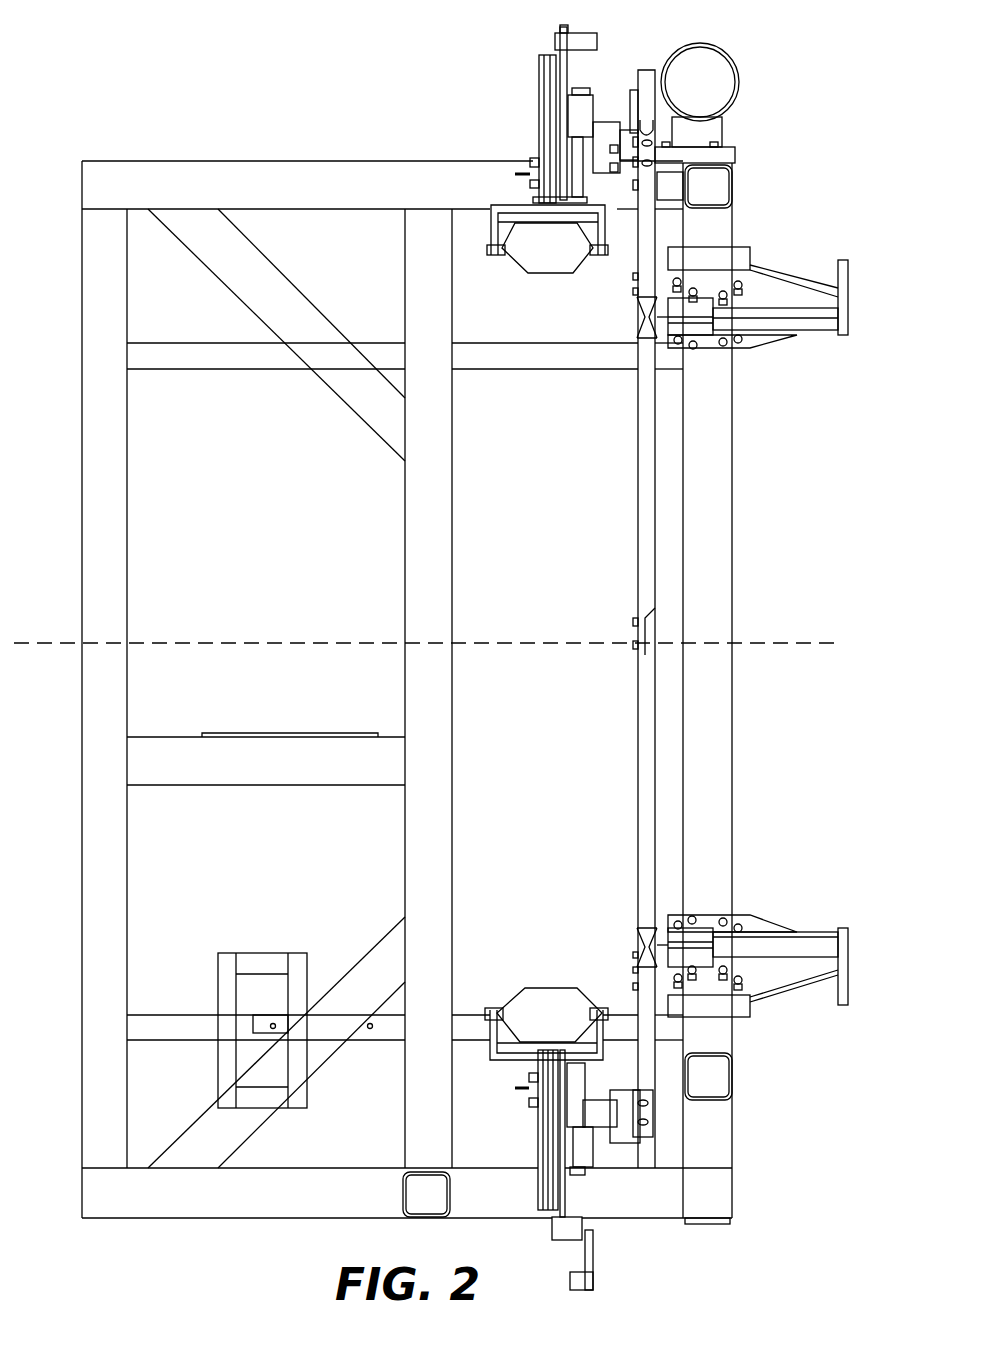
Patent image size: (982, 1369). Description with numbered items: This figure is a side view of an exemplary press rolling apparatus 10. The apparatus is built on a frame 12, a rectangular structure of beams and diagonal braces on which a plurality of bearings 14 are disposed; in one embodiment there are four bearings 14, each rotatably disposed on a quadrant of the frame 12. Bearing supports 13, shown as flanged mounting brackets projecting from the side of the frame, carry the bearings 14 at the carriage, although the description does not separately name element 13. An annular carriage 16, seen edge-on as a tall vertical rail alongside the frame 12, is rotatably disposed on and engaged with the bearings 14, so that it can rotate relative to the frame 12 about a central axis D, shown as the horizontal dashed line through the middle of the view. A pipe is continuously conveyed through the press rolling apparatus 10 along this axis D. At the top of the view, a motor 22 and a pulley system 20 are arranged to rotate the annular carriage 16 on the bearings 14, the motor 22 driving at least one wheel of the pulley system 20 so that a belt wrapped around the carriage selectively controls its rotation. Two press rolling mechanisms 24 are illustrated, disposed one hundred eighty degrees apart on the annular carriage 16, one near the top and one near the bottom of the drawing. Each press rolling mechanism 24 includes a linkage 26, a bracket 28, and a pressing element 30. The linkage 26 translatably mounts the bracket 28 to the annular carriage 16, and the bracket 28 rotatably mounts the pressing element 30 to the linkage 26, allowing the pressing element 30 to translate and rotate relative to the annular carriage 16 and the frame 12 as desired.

The press rolling apparatus 10 is at (86, 124).
The frame 12 is at (287, 182).
The mounting bracket 13 is at (792, 273).
The bearings 14 is at (637, 305).
The annular carriage 16 is at (643, 490).
The pulley system 20 is at (650, 78).
The motor 22 is at (717, 65).
The press rolling mechanisms 24 is at (503, 79).
The linkage 26 is at (540, 128).
The bracket 28 is at (488, 233).
The pressing element 30 is at (542, 275).
The central axis D is at (64, 642).